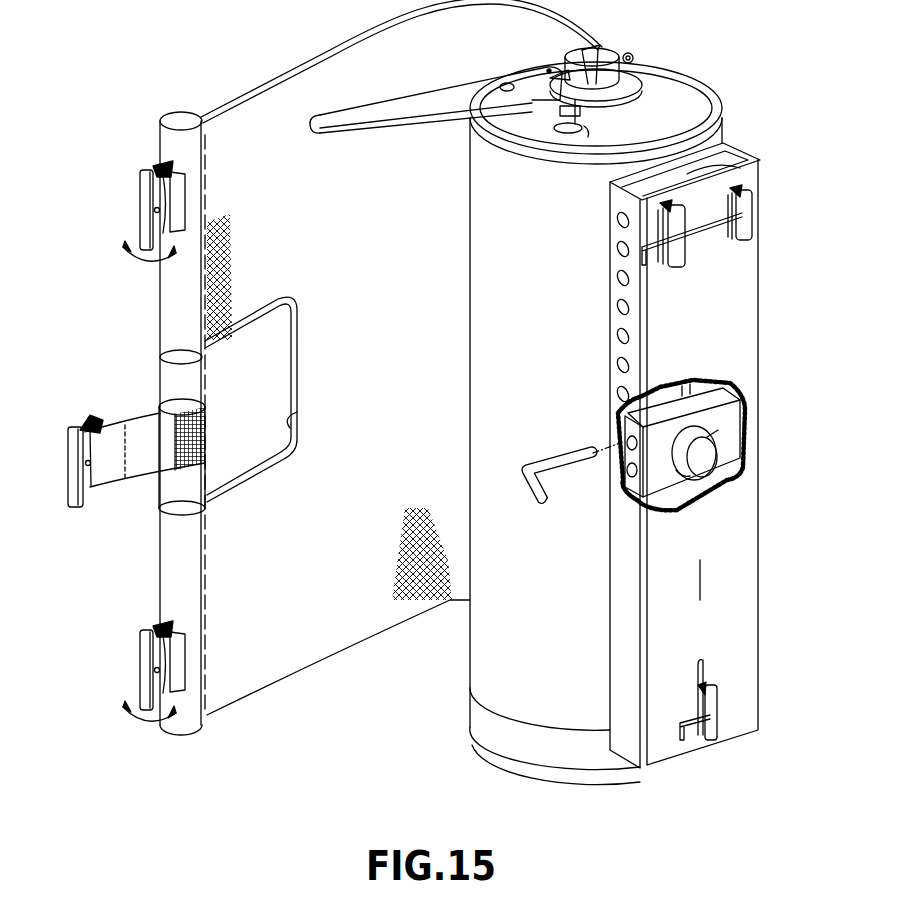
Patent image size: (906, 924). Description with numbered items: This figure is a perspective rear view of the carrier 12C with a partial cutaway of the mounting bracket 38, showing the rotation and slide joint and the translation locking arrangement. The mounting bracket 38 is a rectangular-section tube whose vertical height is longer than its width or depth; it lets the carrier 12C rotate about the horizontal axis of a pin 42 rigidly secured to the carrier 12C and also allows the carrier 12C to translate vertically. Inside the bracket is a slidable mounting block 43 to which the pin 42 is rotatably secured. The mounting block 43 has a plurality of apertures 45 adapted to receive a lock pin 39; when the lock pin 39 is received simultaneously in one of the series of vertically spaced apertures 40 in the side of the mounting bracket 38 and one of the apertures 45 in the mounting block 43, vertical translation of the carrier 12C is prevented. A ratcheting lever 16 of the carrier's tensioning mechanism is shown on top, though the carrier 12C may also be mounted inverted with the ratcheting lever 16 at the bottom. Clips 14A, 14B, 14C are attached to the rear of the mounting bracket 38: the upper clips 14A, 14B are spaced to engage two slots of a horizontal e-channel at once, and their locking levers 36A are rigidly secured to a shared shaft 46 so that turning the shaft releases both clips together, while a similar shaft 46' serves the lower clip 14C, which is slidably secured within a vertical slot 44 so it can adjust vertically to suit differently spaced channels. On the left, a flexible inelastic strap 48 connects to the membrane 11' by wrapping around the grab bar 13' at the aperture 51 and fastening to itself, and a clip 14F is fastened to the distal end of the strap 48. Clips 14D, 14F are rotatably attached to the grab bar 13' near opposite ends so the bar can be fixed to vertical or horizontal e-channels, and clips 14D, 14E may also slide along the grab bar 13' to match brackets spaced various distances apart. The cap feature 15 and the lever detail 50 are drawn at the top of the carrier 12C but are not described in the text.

The membrane 11' is at (401, 357).
The carrier 12C is at (487, 657).
The grab bar 13' is at (162, 423).
The upper clip 14A is at (660, 229).
The upper clip 14B is at (752, 218).
The lower clip 14C is at (717, 717).
The clip 14D is at (147, 228).
The clip 14E is at (145, 685).
The clip 14F is at (77, 428).
The valve cap 15 is at (600, 46).
The ratcheting lever 16 is at (421, 107).
The locking lever 36A is at (742, 170).
The mounting bracket 38 is at (727, 530).
The lock pin 39 is at (542, 466).
The apertures 40 is at (614, 366).
The pin 42 is at (707, 457).
The mounting block 43 is at (720, 423).
The vertical slot 44 is at (737, 645).
The apertures 45 is at (622, 450).
The shared shaft 46 is at (718, 262).
The shaft 46' is at (638, 709).
The strap 48 is at (133, 470).
The lever pivot 50 is at (474, 80).
The aperture 51 is at (292, 413).